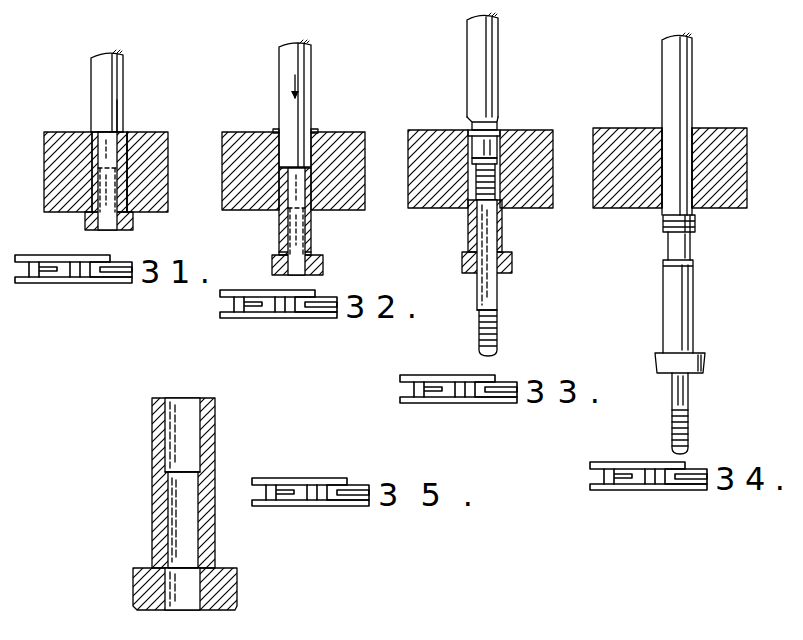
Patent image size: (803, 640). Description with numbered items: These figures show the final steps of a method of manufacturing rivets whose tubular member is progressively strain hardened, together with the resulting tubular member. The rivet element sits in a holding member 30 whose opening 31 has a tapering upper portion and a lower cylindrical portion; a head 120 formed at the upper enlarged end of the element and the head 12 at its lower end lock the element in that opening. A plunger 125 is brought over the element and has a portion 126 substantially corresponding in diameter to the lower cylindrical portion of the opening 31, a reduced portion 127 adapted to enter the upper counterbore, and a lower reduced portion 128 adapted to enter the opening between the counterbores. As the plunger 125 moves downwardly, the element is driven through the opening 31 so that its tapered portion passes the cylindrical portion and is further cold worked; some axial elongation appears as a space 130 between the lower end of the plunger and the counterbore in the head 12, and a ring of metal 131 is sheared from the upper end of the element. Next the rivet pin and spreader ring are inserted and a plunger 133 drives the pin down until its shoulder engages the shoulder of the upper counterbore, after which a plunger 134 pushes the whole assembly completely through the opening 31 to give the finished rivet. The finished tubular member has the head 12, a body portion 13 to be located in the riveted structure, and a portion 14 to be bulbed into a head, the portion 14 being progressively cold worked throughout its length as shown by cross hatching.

In FIG. 31, the head 12 is at (87, 226).
In FIG. 32, the head 12 is at (272, 268).
In FIG. 33, the head 12 is at (463, 258).
In FIG. 34, the head 12 is at (657, 358).
In FIG. 35, the head 12 is at (238, 592).
In FIG. 35, the body portion 13 is at (212, 536).
In FIG. 35, the portion adapted to be bulbed 14 is at (214, 430).
In FIG. 31, the holding member 30 is at (57, 138).
In FIG. 32, the holding member 30 is at (359, 132).
In FIG. 33, the holding member 30 is at (522, 130).
In FIG. 34, the holding member 30 is at (722, 128).
In FIG. 34, the opening 31 is at (692, 200).
In FIG. 31, the head 120 is at (90, 131).
In FIG. 31, the plunger 125 is at (108, 86).
In FIG. 32, the plunger 125 is at (313, 77).
In FIG. 31, the portion 126 is at (118, 112).
In FIG. 31, the reduced portion 127 is at (133, 134).
In FIG. 31, the lower reduced portion 128 is at (143, 158).
In FIG. 32, the space 130 is at (313, 248).
In FIG. 32, the ring of metal 131 is at (318, 130).
In FIG. 33, the plunger 133 is at (490, 65).
In FIG. 34, the plunger 134 is at (687, 76).